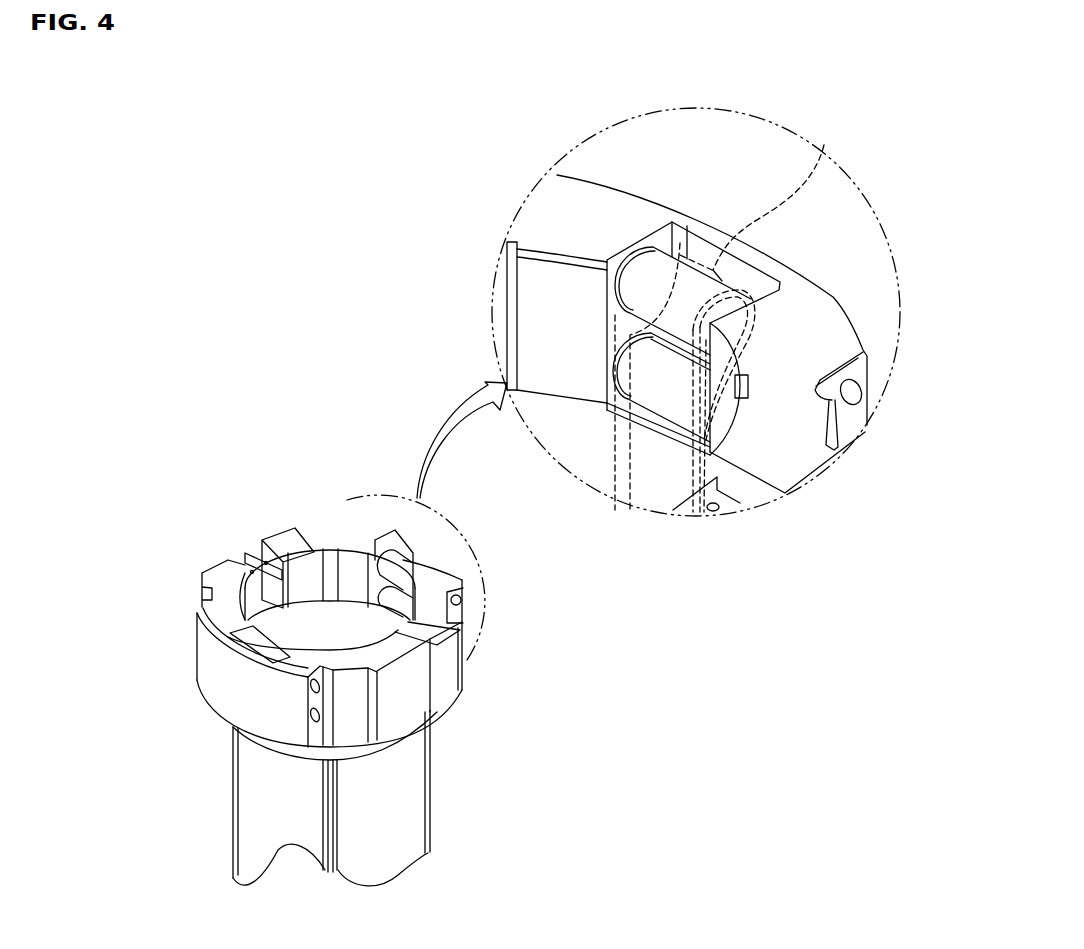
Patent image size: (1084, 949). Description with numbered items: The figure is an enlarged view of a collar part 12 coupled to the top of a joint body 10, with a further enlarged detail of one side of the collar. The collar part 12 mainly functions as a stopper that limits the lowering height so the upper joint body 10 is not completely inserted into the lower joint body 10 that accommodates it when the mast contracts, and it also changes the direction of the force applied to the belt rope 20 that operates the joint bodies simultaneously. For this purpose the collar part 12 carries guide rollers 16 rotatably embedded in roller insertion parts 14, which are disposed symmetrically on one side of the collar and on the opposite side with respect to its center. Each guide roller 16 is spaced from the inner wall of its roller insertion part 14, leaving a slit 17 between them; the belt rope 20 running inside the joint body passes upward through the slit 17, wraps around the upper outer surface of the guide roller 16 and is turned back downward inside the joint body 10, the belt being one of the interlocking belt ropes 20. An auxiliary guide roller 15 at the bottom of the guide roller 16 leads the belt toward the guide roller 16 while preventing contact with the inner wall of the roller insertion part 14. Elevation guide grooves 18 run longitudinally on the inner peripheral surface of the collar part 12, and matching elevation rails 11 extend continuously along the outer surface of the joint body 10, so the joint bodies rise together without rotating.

The joint body 10 is at (291, 798).
The elevation rail 11 is at (247, 800).
The collar part 12 is at (813, 320).
The roller insertion part 14 is at (681, 242).
The auxiliary guide roller 15 is at (660, 367).
The guide roller 16 is at (645, 288).
The slit 17 is at (824, 145).
The elevation guide groove 18 is at (253, 643).
The belt rope 20 is at (613, 466).